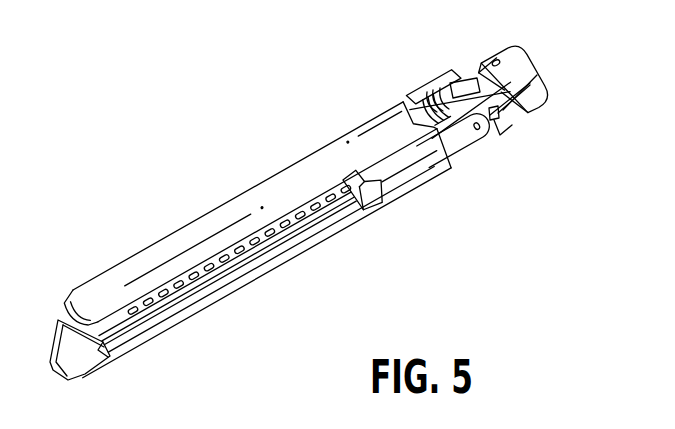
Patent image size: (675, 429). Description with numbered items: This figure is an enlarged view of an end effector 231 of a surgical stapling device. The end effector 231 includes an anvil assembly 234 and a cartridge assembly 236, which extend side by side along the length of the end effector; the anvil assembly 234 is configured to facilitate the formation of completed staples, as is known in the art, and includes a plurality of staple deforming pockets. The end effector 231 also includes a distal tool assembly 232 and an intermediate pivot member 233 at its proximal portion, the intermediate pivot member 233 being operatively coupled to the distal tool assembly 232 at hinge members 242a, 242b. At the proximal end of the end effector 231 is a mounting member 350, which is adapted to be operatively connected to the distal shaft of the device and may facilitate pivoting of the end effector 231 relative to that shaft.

The end effector 231 is at (276, 53).
The distal tool assembly 232 is at (262, 273).
The intermediate pivot member 233 is at (498, 130).
The anvil assembly 234 is at (219, 213).
The cartridge assembly 236 is at (187, 310).
The hinge member 242a is at (472, 143).
The hinge member 242b is at (426, 93).
The mounting member 350 is at (491, 48).